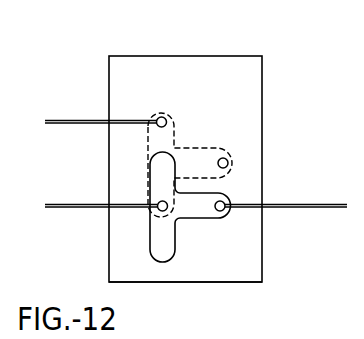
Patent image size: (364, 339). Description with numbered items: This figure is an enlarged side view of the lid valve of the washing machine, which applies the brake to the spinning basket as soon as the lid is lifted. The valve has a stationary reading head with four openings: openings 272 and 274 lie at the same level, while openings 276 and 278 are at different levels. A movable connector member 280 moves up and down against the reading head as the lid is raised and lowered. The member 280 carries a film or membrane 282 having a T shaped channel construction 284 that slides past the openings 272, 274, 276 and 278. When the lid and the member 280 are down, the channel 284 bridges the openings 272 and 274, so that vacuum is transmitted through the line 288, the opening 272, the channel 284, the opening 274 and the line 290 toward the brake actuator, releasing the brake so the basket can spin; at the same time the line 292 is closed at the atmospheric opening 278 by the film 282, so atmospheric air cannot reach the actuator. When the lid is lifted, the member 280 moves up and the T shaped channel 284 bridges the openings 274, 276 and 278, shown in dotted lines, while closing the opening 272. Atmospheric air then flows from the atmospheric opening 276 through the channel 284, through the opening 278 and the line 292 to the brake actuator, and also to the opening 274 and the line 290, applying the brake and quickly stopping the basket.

The opening 272 is at (228, 220).
The opening 274 is at (177, 190).
The atmospheric opening 276 is at (223, 157).
The atmospheric opening 278 is at (162, 116).
The movable connector member 280 is at (268, 272).
The film or membrane 282 is at (210, 274).
The T shaped channel construction 284 is at (190, 213).
The line 288 is at (283, 203).
The line 290 is at (58, 203).
The line 292 is at (67, 120).